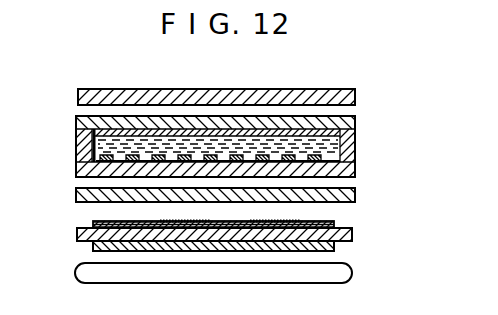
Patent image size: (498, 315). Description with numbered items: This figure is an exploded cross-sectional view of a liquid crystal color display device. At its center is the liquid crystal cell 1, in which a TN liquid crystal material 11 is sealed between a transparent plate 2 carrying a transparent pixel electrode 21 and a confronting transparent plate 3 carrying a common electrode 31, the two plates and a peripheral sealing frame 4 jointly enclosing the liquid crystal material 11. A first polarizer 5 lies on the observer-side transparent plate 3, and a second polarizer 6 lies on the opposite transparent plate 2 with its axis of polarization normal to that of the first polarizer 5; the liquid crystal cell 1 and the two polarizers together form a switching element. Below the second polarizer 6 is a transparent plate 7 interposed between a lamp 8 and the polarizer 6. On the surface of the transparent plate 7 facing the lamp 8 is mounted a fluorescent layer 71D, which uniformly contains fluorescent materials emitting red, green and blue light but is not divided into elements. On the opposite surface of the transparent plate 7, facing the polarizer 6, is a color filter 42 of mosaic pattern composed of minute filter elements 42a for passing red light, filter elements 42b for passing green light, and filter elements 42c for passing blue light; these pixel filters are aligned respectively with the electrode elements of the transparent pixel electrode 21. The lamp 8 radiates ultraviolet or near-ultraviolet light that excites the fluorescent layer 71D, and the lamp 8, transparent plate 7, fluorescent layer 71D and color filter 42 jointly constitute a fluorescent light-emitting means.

The liquid crystal cell 1 is at (405, 117).
The transparent plate 2 is at (356, 168).
The transparent plate 3 is at (356, 122).
The peripheral sealing frame 4 is at (78, 143).
The first polarizer 5 is at (356, 97).
The second polarizer 6 is at (356, 197).
The transparent plate 7 is at (79, 233).
The lamp 8 is at (352, 277).
The TN liquid crystal material 11 is at (356, 148).
The transparent pixel electrode 21 is at (93, 155).
The common electrode 31 is at (78, 119).
The color filter 42 is at (335, 225).
The filter elements 42a is at (93, 226).
The filter elements 42b is at (157, 224).
The filter elements 42c is at (155, 221).
The fluorescent layer 71D is at (335, 249).